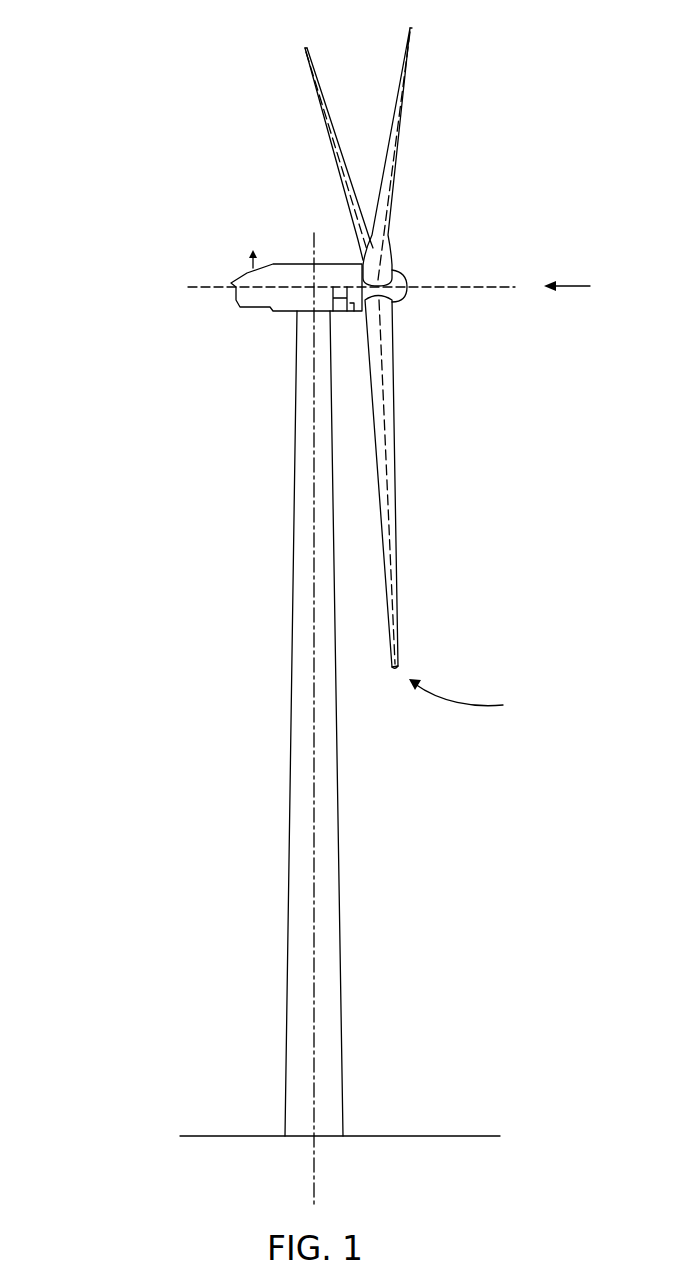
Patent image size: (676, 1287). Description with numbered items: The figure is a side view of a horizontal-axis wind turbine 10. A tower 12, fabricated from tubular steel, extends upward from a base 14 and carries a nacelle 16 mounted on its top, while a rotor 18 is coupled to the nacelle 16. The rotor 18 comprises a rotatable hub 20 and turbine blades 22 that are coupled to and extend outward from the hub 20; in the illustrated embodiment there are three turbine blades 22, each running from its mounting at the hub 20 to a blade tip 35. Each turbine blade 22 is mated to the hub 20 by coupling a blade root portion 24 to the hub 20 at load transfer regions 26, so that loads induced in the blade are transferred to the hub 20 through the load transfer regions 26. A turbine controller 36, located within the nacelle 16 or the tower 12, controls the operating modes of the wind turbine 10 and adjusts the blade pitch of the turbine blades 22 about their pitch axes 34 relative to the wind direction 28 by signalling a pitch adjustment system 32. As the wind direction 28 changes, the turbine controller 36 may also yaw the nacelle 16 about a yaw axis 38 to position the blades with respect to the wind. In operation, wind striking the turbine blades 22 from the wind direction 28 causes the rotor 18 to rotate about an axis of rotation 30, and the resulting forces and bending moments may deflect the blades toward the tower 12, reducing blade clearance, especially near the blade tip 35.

The wind turbine 10 is at (101, 86).
The tower 12 is at (287, 877).
The base 14 is at (205, 1136).
The nacelle 16 is at (258, 310).
The rotor 18 is at (426, 197).
The hub 20 is at (401, 281).
The turbine blade 22 is at (328, 127).
The blade root portion 24 is at (386, 432).
The load transfer region 26 is at (393, 314).
The wind direction 28 is at (582, 285).
The axis of rotation 30 is at (497, 286).
The pitch adjustment system 32 is at (350, 316).
The pitch axis 34 is at (303, 62).
The blade tip 35 is at (470, 696).
The turbine controller 36 is at (310, 328).
The yaw axis 38 is at (313, 762).